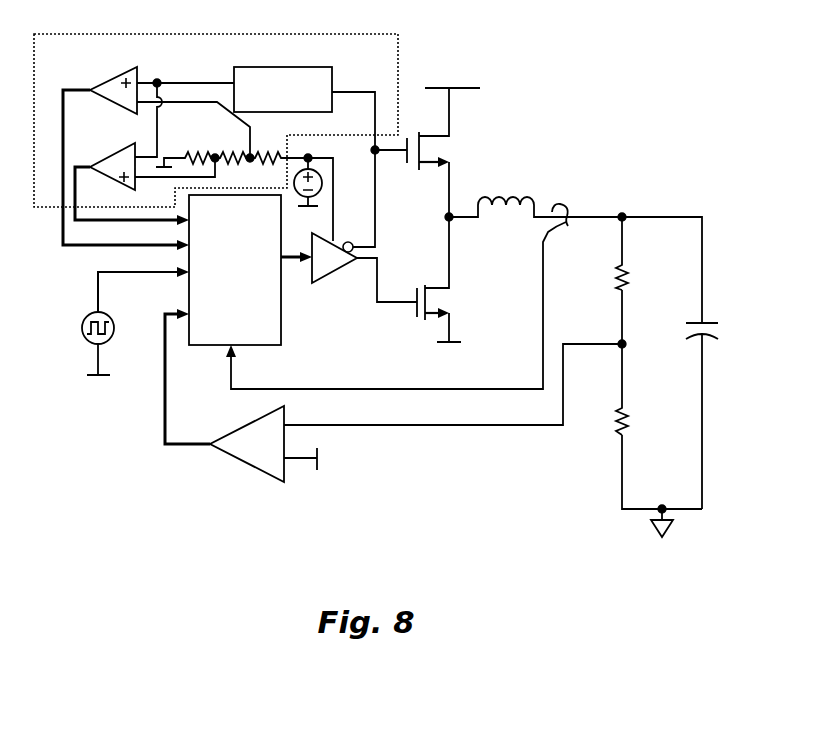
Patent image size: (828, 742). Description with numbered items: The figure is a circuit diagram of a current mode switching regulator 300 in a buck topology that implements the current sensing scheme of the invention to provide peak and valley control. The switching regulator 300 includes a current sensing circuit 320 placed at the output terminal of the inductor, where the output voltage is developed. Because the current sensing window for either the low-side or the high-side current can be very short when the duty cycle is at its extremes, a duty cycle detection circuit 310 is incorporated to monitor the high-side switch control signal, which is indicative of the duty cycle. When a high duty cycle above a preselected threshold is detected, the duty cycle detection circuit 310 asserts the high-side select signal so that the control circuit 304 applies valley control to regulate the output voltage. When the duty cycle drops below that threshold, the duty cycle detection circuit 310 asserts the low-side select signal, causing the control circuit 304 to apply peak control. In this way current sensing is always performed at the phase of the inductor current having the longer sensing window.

The switching regulator 300 is at (566, 40).
The control circuit 304 is at (218, 336).
The duty cycle detection circuit 310 is at (337, 35).
The current sensing circuit 320 is at (568, 226).